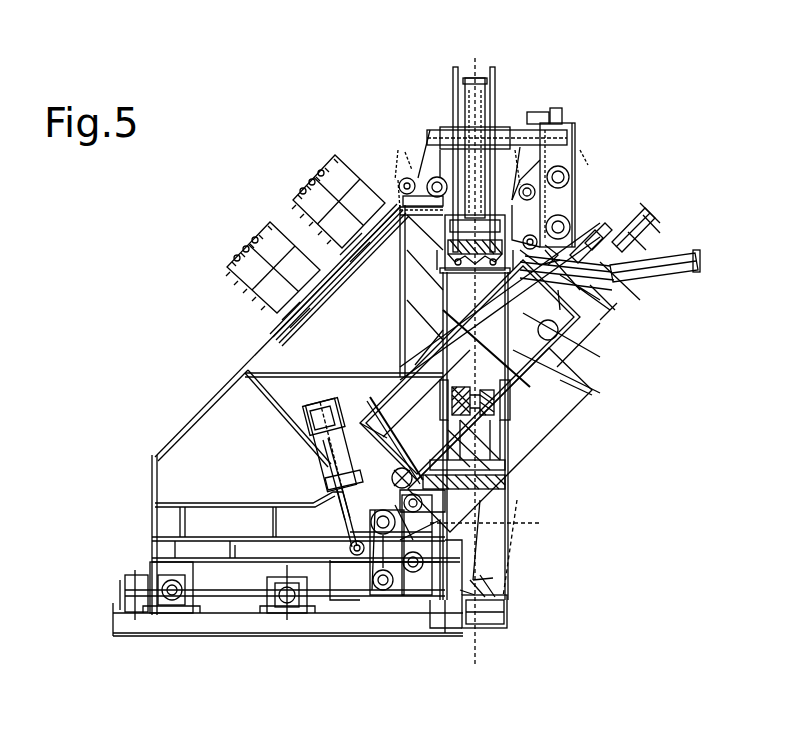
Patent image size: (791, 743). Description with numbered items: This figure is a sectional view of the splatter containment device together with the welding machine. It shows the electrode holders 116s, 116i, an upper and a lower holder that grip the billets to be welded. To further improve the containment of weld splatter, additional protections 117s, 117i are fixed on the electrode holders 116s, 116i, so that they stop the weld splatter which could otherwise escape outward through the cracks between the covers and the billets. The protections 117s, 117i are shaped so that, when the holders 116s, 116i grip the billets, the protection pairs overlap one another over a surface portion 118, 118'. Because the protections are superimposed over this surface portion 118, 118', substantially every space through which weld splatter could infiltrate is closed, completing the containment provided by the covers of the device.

The electrode holder 116s is at (592, 360).
The electrode holder 116i is at (473, 458).
The additional protection 117s is at (560, 418).
The additional protection 117i is at (395, 398).
The surface portion 118 is at (556, 435).
The surface portion 118' is at (475, 400).